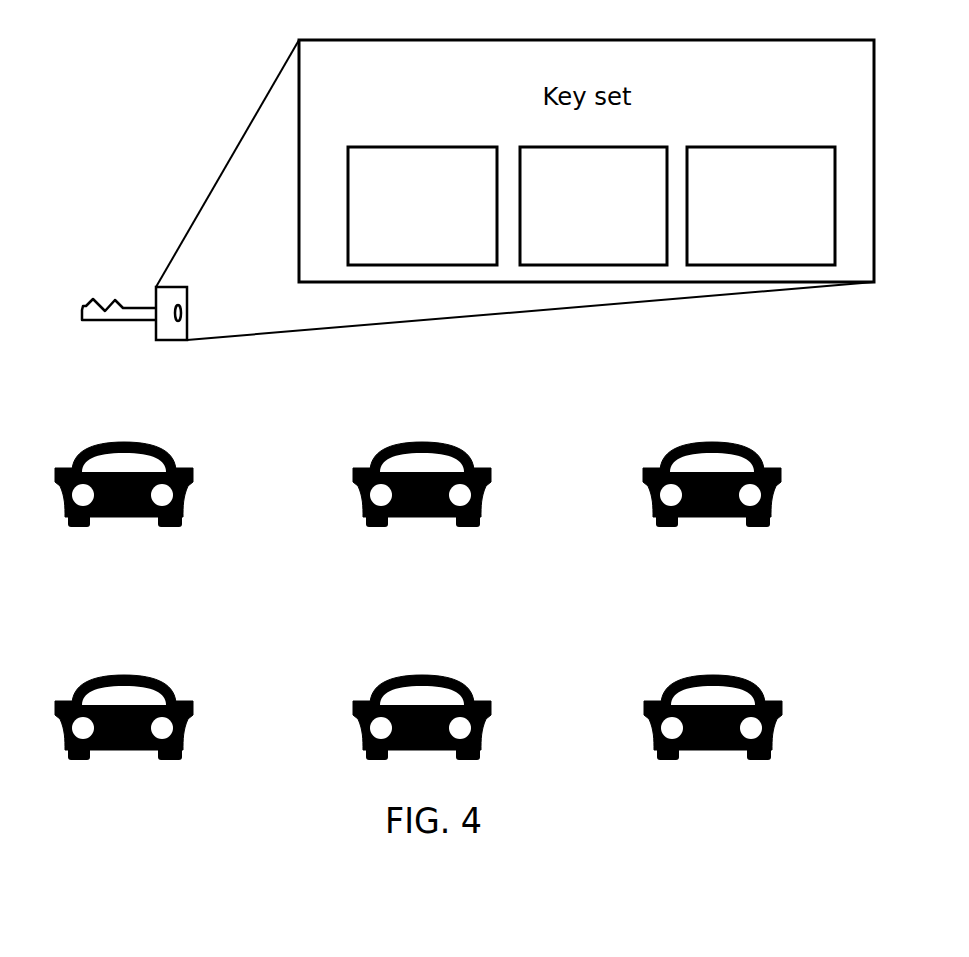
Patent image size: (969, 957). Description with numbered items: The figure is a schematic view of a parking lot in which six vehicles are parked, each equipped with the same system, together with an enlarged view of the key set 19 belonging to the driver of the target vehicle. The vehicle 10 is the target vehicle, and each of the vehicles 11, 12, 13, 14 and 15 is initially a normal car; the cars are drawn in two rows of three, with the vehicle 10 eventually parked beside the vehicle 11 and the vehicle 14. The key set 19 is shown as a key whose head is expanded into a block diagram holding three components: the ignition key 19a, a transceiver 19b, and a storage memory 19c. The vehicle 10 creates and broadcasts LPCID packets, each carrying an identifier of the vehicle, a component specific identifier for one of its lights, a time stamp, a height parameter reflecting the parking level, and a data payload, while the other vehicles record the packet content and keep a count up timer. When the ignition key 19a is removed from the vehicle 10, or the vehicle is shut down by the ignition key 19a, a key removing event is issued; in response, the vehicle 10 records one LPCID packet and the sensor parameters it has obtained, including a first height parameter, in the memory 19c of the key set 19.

The key set 19 is at (93, 302).
The ignition key 19a is at (402, 236).
The transceiver 19b is at (573, 236).
The memory 19c is at (783, 236).
The vehicle 10 is at (167, 450).
The vehicle 11 is at (172, 687).
The vehicle 12 is at (462, 683).
The vehicle 13 is at (758, 683).
The vehicle 14 is at (462, 450).
The vehicle 15 is at (758, 452).